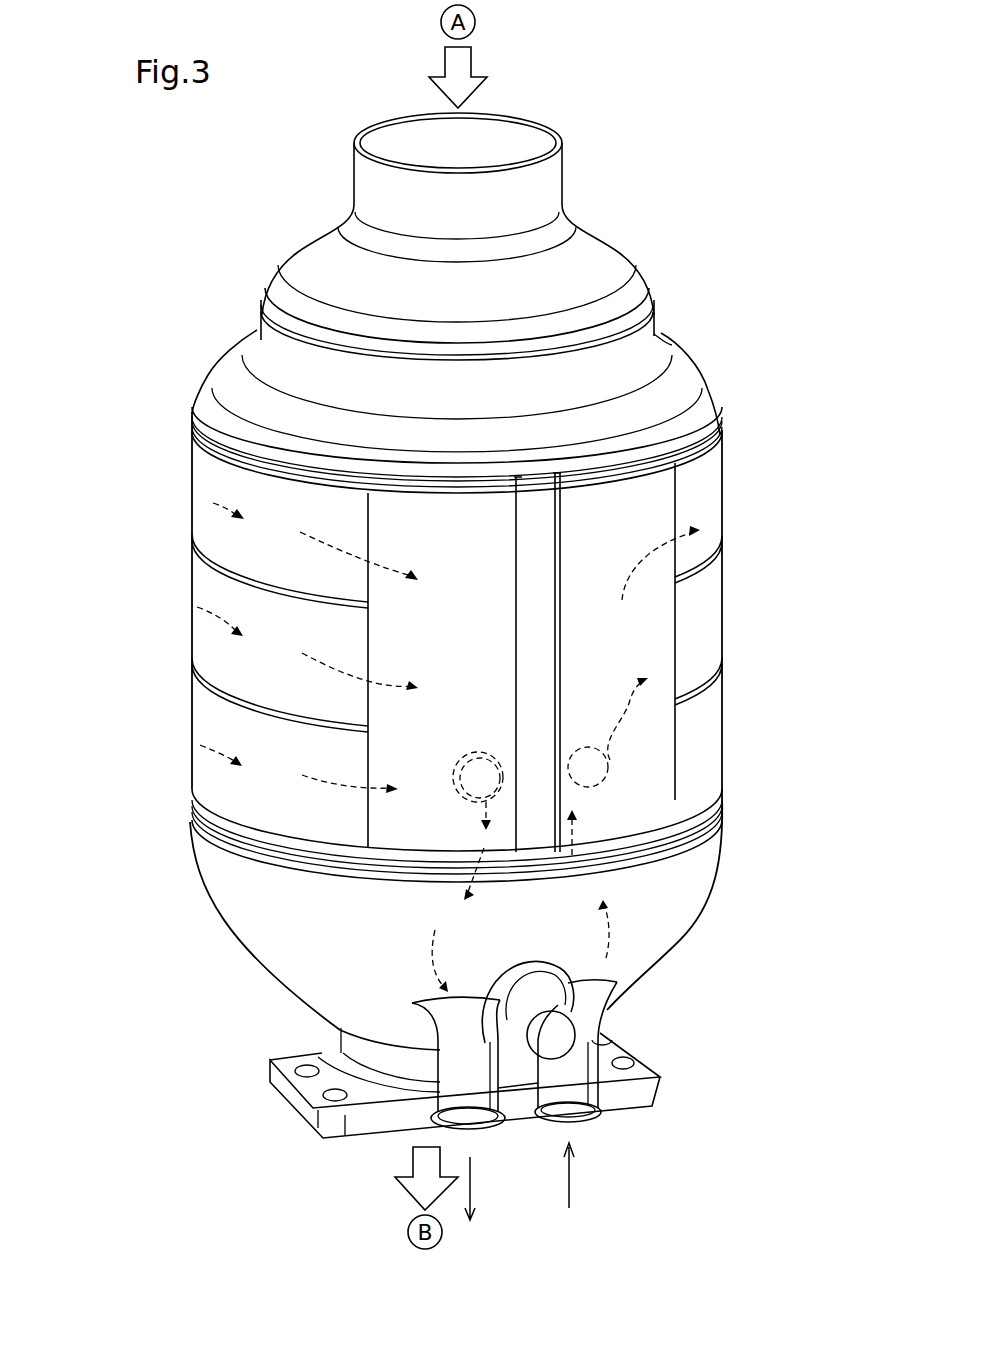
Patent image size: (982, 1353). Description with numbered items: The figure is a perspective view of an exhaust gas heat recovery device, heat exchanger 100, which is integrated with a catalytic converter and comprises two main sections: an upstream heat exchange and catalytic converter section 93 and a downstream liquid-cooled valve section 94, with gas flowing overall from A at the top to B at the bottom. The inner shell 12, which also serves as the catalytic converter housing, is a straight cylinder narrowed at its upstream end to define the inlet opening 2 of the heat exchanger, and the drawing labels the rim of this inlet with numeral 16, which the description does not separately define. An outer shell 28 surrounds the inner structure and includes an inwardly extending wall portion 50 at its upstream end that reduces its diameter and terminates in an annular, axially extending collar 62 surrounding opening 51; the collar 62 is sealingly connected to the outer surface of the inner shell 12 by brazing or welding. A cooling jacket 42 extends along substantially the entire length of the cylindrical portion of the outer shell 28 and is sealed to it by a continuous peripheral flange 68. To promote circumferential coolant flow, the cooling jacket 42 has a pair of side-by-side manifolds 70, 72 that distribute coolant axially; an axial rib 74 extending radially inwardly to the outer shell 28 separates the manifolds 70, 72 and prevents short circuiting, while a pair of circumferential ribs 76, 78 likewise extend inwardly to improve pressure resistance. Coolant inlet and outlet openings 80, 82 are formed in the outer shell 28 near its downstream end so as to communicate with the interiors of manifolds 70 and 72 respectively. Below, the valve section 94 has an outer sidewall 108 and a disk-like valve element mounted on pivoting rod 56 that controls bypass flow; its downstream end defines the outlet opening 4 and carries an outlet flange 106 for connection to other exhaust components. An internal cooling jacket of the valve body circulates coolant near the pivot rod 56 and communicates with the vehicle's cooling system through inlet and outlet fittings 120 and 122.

The heat exchanger 100 is at (703, 260).
The inlet opening 2 is at (541, 122).
The inlet opening 16 is at (385, 147).
The inner shell 12 is at (274, 271).
The collar 62 is at (258, 326).
The opening 51 is at (642, 300).
The outer shell 28 is at (209, 372).
The inwardly extending wall portion 50 is at (680, 371).
The peripheral flange 68 is at (721, 424).
The manifold 72 is at (399, 720).
The circumferential rib 76 is at (192, 535).
The circumferential rib 78 is at (192, 659).
The cooling jacket 42 is at (727, 576).
The axial rib 74 is at (548, 521).
The manifold 70 is at (630, 647).
The coolant outlet opening 82 is at (483, 794).
The coolant inlet opening 80 is at (590, 782).
The heat exchange and catalytic converter section 93 is at (90, 660).
The outer sidewall 108 is at (283, 959).
The liquid-cooled valve section 94 is at (726, 880).
The pivoting rod 56 is at (558, 1034).
The outlet opening 4 is at (357, 1143).
The outlet flange 106 is at (665, 1083).
The outlet fitting 122 is at (468, 1112).
The inlet fitting 120 is at (582, 1112).